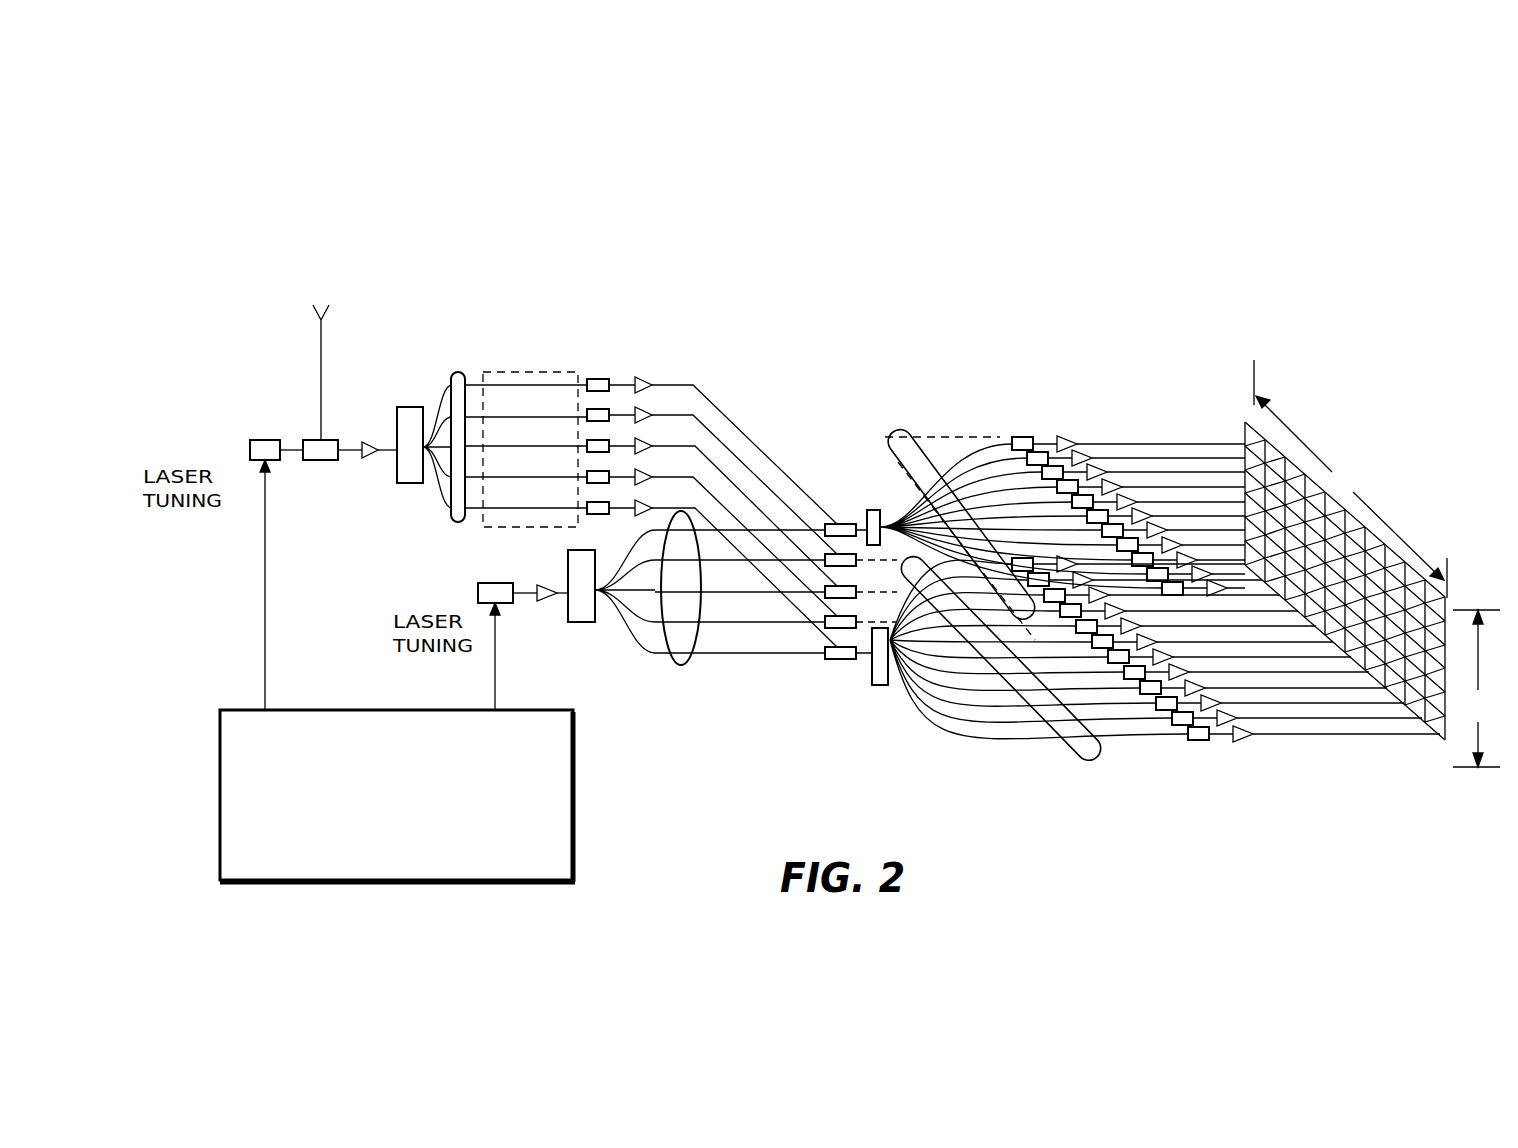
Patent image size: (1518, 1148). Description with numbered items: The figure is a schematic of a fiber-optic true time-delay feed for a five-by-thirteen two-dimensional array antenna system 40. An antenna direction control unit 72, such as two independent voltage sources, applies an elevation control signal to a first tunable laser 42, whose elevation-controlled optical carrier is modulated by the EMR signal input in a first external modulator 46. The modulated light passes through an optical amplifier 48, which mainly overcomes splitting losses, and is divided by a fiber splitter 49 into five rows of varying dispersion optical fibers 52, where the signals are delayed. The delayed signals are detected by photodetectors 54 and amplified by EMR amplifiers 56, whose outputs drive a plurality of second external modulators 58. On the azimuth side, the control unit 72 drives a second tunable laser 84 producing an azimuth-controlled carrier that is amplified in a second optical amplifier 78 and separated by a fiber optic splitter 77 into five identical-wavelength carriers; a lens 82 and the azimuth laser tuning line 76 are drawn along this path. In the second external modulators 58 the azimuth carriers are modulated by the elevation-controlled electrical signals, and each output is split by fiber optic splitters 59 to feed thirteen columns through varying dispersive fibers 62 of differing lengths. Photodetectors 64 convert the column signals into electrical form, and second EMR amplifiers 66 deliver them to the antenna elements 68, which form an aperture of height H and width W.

The two-dimensional array antenna system 40 is at (877, 218).
The first tunable laser 42 is at (250, 449).
The first external modulator 46 is at (312, 440).
The optical amplifier 48 is at (376, 454).
The fiber splitter 49 is at (408, 483).
The varying dispersion optical fibers 52 is at (455, 376).
The photodetectors 54 is at (608, 378).
The EMR amplifiers 56 is at (653, 377).
The second external modulators 58 is at (842, 660).
The fiber optic splitters 59 is at (868, 510).
The varying dispersive fibers 62 is at (888, 440).
The photodetectors 64 is at (1013, 437).
The second EMR amplifiers 66 is at (1080, 440).
The antenna elements 68 is at (1432, 740).
The antenna direction control unit 72 is at (573, 777).
The azimuth laser tuning line 76 is at (495, 652).
The fiber optic splitter 77 is at (578, 622).
The second optical amplifier 78 is at (551, 598).
The lens 82 is at (688, 663).
The second tunable laser 84 is at (478, 590).